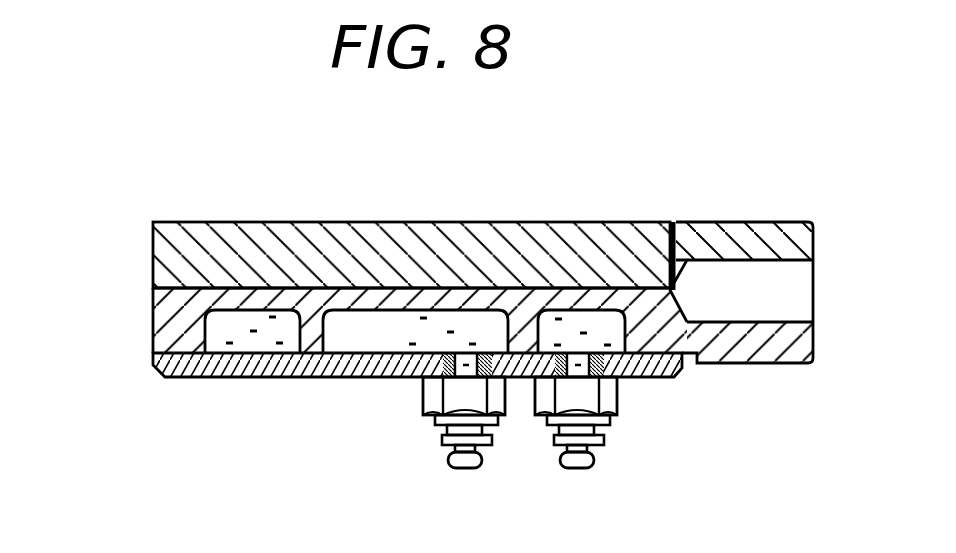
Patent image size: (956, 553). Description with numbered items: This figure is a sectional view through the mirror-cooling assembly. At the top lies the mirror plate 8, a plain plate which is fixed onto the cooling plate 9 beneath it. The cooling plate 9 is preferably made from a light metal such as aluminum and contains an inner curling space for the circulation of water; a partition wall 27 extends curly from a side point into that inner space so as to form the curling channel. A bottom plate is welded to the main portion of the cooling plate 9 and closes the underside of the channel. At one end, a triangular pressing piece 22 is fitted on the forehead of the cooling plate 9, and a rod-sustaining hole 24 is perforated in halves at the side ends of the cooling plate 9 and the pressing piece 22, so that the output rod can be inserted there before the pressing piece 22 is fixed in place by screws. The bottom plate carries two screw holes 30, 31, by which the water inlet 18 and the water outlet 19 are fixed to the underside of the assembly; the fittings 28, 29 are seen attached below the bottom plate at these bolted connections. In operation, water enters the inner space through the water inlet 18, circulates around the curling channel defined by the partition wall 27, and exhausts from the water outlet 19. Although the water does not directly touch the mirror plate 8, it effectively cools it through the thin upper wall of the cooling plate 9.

The mirror plate 8 is at (367, 230).
The cooling plate 9 is at (177, 300).
The pressing piece 22 is at (813, 188).
The rod-sustaining hole 24 is at (712, 287).
The partition wall 27 is at (290, 378).
The screw hole 31 is at (445, 383).
The screw hole 30 is at (613, 367).
The nut fitting 29 is at (463, 432).
The nut fitting 28 is at (580, 428).
The water outlet 19 is at (466, 473).
The water inlet 18 is at (628, 492).